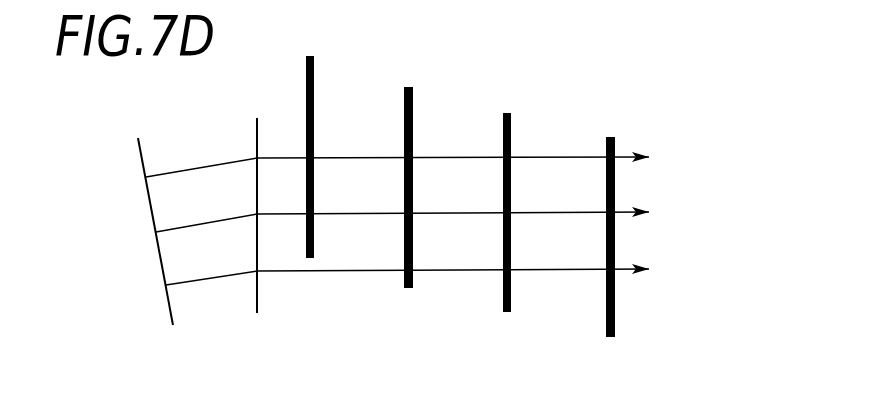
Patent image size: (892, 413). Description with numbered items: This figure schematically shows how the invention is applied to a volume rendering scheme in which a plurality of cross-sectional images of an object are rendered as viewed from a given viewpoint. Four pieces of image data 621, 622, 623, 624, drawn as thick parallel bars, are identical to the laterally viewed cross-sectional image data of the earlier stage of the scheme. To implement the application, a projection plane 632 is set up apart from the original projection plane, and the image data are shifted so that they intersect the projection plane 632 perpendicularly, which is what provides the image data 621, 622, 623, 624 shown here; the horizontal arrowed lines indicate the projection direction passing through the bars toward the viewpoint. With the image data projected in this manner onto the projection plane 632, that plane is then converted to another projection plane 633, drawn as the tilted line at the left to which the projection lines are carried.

The projection plane 633 is at (137, 155).
The projection plane 632 is at (257, 136).
The image data 624 is at (310, 258).
The image data 623 is at (408, 289).
The image data 622 is at (507, 312).
The image data 621 is at (611, 337).